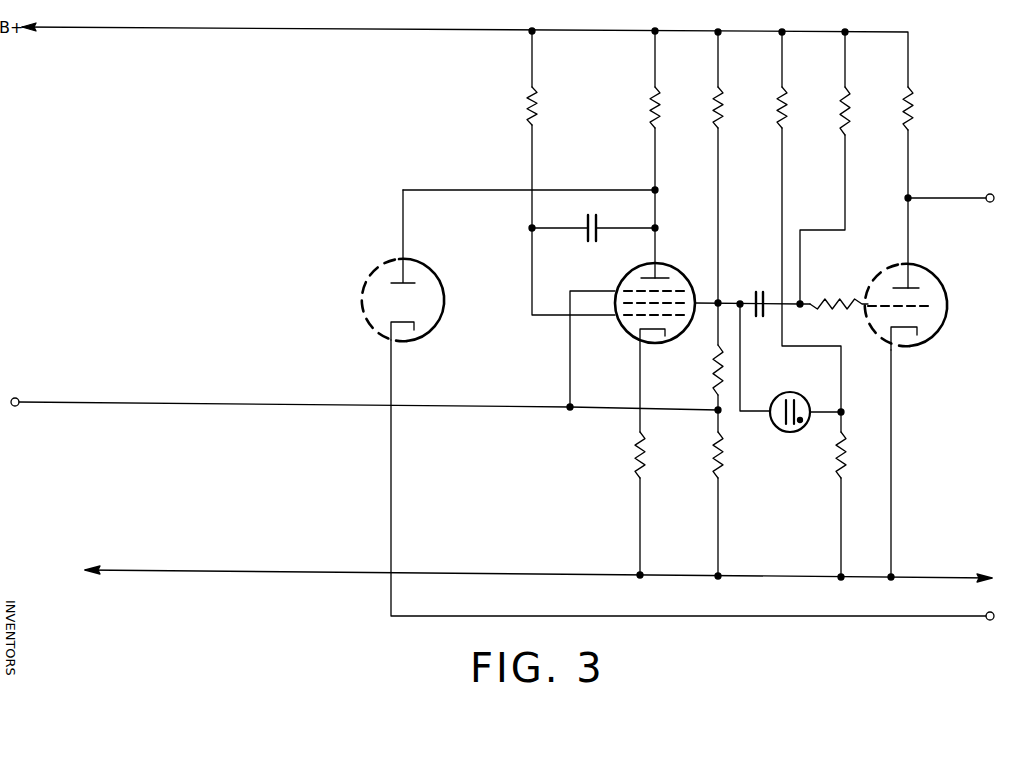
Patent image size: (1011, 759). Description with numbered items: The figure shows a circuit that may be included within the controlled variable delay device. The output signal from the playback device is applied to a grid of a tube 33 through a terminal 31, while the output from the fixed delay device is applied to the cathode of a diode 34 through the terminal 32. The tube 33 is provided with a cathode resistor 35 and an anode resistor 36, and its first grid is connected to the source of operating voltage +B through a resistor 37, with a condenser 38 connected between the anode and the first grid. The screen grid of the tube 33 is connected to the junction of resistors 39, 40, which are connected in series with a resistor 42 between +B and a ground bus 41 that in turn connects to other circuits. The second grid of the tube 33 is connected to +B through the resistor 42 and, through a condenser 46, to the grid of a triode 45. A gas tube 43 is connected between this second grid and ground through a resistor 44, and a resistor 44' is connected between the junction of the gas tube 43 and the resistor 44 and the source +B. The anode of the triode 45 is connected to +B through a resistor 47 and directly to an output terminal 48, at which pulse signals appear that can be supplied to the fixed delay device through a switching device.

The terminal 31 is at (18, 398).
The terminal 32 is at (986, 612).
The tube 33 is at (672, 265).
The diode 34 is at (428, 268).
The cathode resistor 35 is at (646, 461).
The anode resistor 36 is at (662, 111).
The resistor 37 is at (539, 112).
The condenser 38 is at (600, 224).
The resistor 39 is at (711, 372).
The resistor 40 is at (722, 461).
The ground bus 41 is at (695, 579).
The resistor 42 is at (725, 112).
The gas tube 43 is at (790, 400).
The resistor 44 is at (858, 494).
The resistor 44' is at (809, 247).
The triode 45 is at (927, 270).
The condenser 46 is at (760, 292).
The resistor 47 is at (914, 113).
The output terminal 48 is at (987, 195).